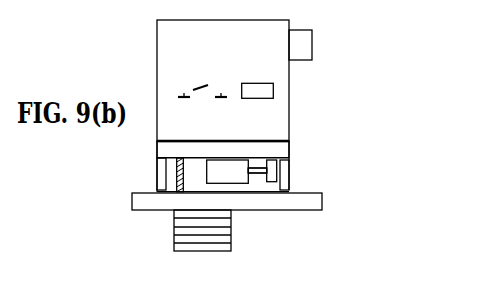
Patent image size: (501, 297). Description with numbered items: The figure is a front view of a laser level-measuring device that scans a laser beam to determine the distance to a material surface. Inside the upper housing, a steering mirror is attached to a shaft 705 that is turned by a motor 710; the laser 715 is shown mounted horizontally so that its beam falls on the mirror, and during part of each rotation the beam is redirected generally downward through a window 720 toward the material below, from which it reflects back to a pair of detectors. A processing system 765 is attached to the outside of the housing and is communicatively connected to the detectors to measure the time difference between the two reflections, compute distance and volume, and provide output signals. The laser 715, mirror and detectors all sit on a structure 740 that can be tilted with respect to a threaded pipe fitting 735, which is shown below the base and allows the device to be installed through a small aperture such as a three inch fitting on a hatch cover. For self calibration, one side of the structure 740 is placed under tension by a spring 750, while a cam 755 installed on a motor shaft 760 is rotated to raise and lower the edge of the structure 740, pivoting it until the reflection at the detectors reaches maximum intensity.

The shaft 705 is at (182, 84).
The motor 710 is at (209, 73).
The window 720 is at (226, 87).
The laser 715 is at (286, 93).
The processing system 765 is at (325, 42).
The structure 740 is at (294, 152).
The cam 755 is at (289, 180).
The motor shaft 760 is at (259, 191).
The spring 750 is at (176, 200).
The pipe fitting 735 is at (214, 262).